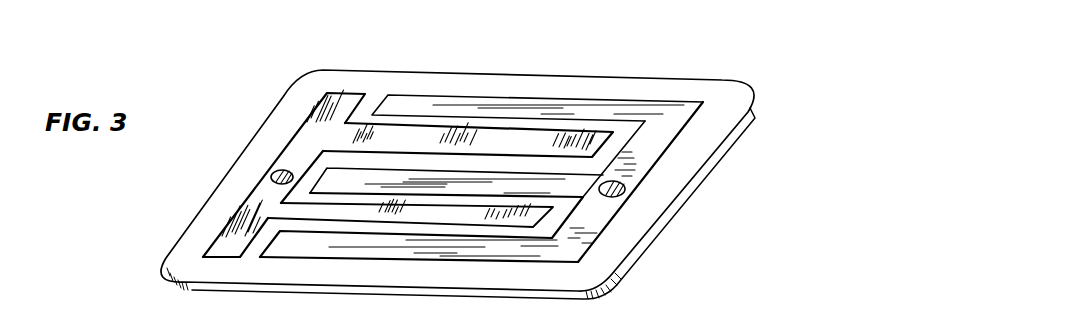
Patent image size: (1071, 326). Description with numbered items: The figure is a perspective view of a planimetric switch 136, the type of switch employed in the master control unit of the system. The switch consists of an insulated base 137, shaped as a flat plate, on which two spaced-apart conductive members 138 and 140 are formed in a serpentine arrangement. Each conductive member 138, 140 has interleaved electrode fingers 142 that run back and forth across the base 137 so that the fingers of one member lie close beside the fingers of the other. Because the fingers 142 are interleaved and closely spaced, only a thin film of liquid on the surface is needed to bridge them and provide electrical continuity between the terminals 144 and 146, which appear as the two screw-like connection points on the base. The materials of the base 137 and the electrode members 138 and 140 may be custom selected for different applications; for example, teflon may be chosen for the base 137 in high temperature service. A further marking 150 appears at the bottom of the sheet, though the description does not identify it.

The planimetric switch 136 is at (608, 66).
The insulated base 137 is at (392, 76).
The conductive member 138 is at (288, 134).
The conductive member 140 is at (630, 200).
The electrode fingers 142 is at (493, 137).
The terminal 144 is at (271, 177).
The terminal 146 is at (626, 189).
The lower surface of plate 150 is at (425, 320).